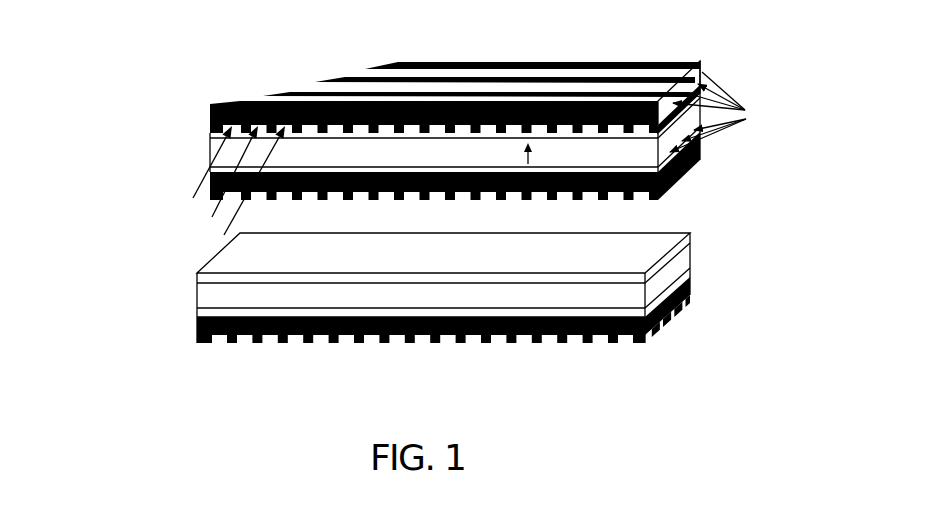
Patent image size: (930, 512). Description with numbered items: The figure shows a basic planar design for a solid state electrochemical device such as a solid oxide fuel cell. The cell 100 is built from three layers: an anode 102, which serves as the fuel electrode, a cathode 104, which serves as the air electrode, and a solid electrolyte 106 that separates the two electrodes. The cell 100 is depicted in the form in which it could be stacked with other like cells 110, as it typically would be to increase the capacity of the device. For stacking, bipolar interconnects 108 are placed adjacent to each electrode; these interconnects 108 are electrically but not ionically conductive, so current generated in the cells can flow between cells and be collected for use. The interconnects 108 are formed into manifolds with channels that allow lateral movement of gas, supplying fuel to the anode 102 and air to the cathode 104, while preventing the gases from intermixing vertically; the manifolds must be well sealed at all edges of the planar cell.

The cell 100 is at (134, 120).
The anode 102 is at (218, 135).
The cathode 104 is at (700, 100).
The solid electrolyte 106 is at (700, 90).
The bipolar interconnects 108 is at (212, 112).
The like cells 110 is at (703, 256).